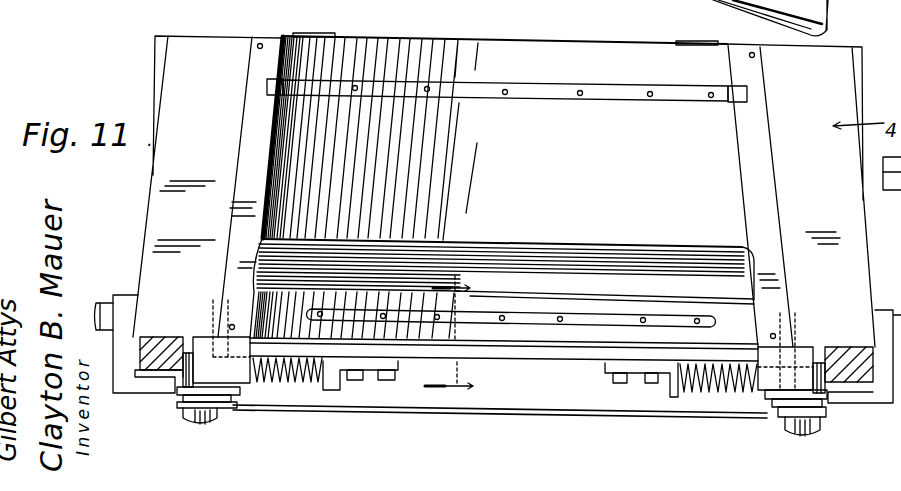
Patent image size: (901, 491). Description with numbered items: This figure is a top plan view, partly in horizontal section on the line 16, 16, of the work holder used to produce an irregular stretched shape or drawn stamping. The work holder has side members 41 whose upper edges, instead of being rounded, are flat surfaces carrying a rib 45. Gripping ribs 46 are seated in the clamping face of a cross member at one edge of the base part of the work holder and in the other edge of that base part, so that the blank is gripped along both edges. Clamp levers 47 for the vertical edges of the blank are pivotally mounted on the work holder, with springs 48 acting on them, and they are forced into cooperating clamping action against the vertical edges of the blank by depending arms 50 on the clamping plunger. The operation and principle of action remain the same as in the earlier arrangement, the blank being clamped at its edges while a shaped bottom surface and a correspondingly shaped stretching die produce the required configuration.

The section line 16 is at (463, 330).
The side members 41 is at (156, 176).
The rib 45 is at (250, 128).
The gripping ribs 46 is at (674, 96).
The clamp levers 47 is at (180, 382).
The springs 48 is at (293, 388).
The depending arms 50 is at (143, 376).